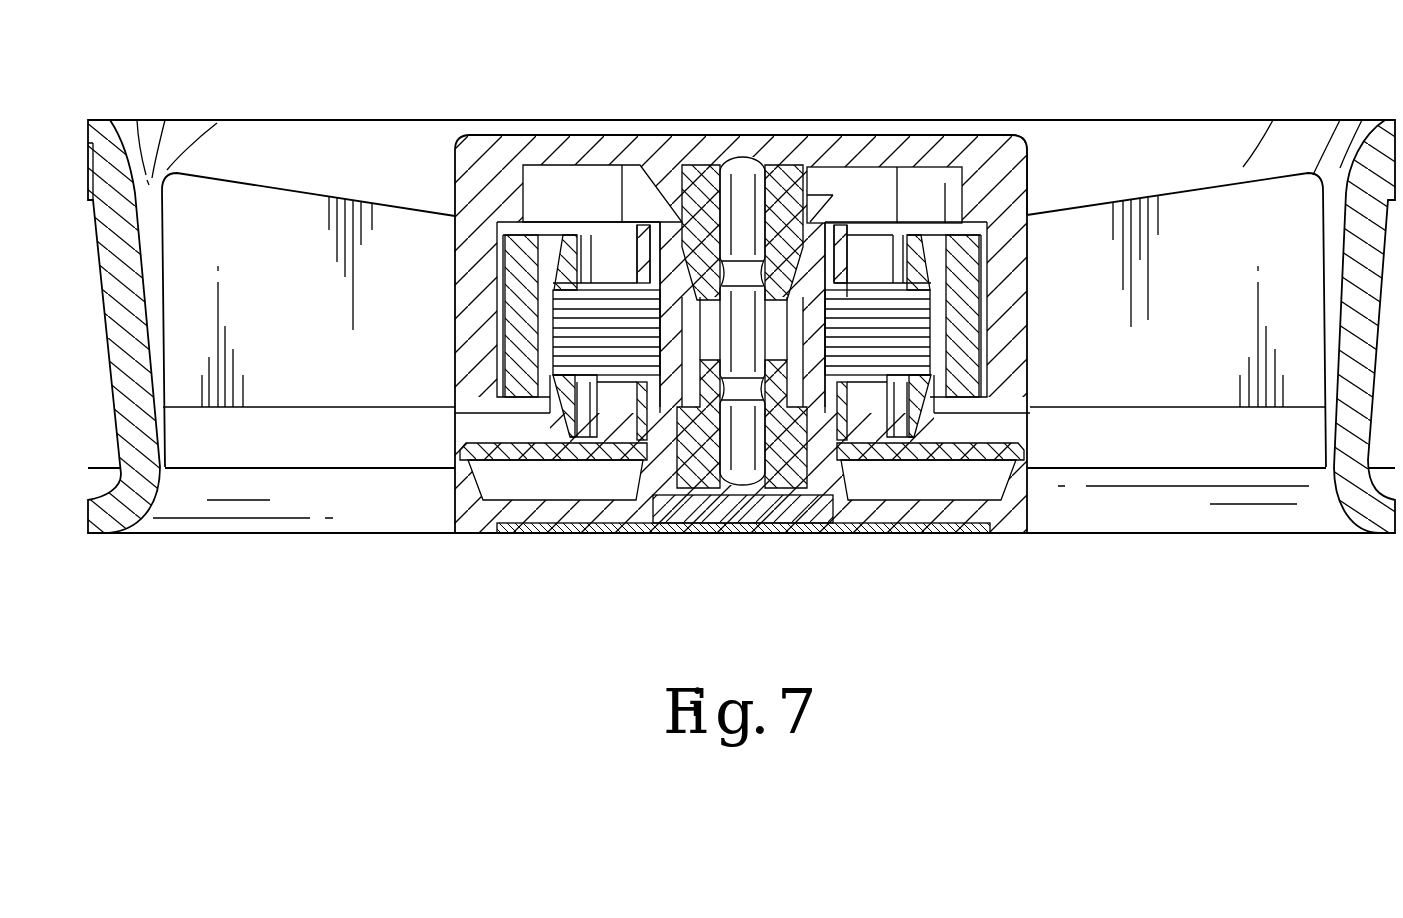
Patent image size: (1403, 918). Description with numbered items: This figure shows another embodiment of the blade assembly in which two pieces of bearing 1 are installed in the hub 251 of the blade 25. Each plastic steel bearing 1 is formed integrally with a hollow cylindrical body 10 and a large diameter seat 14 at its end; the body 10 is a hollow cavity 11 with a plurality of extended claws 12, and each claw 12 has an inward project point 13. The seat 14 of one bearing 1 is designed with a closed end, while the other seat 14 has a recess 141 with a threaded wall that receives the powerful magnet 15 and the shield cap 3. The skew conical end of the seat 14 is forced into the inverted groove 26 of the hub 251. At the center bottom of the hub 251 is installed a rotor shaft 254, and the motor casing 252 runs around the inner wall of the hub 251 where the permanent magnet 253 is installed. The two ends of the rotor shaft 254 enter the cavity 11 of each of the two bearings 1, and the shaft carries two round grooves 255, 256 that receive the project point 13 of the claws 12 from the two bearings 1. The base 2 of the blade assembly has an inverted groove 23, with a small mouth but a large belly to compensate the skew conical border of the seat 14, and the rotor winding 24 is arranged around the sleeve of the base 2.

The plastic steel bearing 1 is at (795, 128).
The base 2 is at (946, 545).
The shield cap 3 is at (980, 533).
The hollow cylindrical body 10 is at (605, 178).
The cavity 11 is at (732, 160).
The claws 12 is at (707, 290).
The project point 13 is at (720, 268).
The seat 14 is at (673, 143).
The powerful magnet 15 is at (730, 520).
The inverted groove 23 is at (837, 528).
The rotor winding 24 is at (915, 323).
The blade 25 is at (1287, 178).
The inverted groove 26 is at (678, 158).
The recess 141 is at (660, 523).
The hub 251 is at (1023, 132).
The motor casing 252 is at (500, 250).
The permanent magnet 253 is at (520, 274).
The rotor shaft 254 is at (807, 170).
The round groove 255 is at (718, 398).
The round groove 256 is at (687, 205).